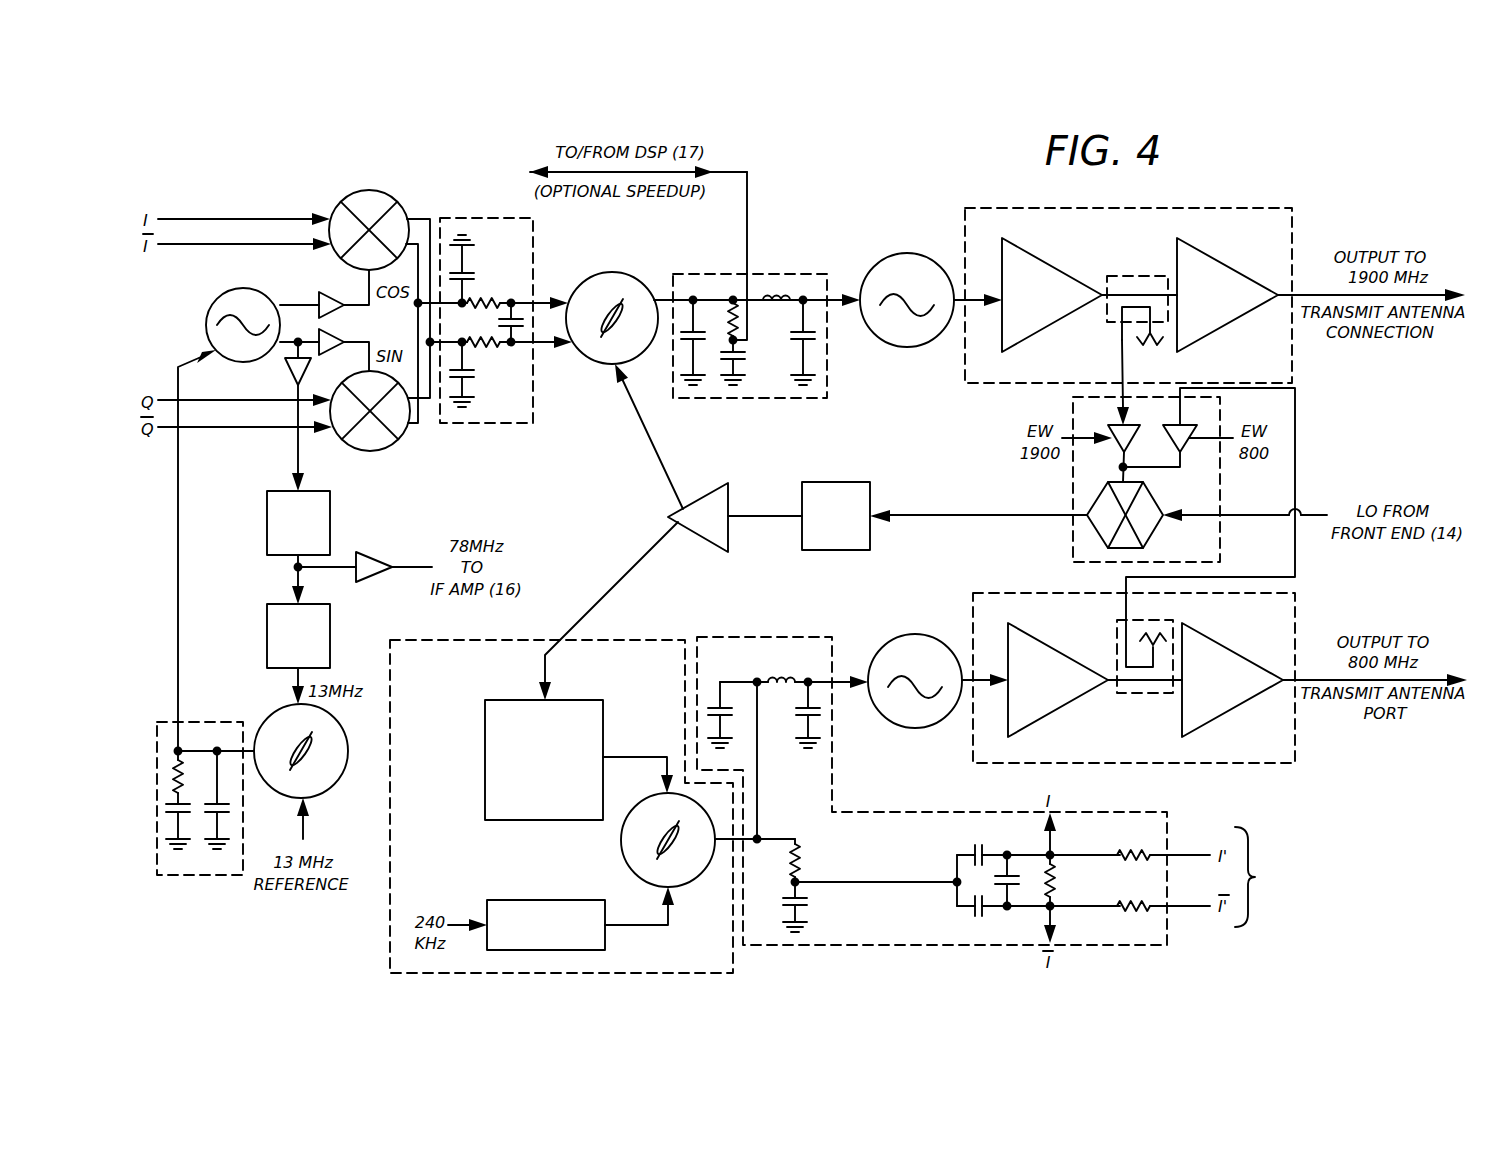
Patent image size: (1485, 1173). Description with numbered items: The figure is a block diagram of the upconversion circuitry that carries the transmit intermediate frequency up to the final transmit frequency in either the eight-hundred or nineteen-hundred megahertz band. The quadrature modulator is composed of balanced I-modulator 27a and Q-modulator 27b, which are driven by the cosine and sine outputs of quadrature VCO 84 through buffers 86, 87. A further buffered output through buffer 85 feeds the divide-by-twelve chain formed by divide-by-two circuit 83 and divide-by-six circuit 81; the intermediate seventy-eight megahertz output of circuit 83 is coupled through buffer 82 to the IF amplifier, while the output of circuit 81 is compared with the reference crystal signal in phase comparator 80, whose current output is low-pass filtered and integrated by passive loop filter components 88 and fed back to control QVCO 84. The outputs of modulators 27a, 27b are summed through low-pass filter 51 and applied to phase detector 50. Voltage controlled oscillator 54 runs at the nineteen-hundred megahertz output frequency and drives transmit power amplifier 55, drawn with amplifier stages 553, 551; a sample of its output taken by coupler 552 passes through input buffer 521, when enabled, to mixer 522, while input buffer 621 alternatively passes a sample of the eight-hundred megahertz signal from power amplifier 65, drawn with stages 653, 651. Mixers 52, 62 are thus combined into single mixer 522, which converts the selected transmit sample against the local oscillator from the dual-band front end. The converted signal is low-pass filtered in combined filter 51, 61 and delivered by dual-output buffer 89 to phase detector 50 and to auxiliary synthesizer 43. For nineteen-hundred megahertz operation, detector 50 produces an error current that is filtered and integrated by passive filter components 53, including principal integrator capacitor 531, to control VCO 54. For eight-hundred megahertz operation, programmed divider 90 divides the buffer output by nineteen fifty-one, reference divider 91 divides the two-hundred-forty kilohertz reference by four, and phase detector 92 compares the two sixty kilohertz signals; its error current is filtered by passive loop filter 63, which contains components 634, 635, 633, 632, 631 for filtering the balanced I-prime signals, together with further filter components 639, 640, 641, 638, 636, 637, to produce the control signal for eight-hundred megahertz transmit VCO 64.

The I-modulator 27a is at (370, 190).
The Q-modulator 27b is at (370, 452).
The quadrature VCO 84 is at (243, 288).
The buffer 85 is at (290, 372).
The buffer 86 is at (325, 292).
The buffer 87 is at (327, 355).
The low-pass filter 51 is at (500, 425).
The phase detector 50 is at (612, 272).
The loop filter 53 is at (750, 362).
The loop filter capacitor 531 is at (747, 357).
The voltage controlled oscillator 54 is at (905, 347).
The transmit power amplifier 55 is at (1260, 208).
The coupler 552 is at (1138, 275).
The buffer amplifier 553 is at (1043, 330).
The power amplifier 551 is at (1227, 328).
The input buffer 521 is at (1136, 434).
The input buffer 621 is at (1188, 454).
The mixer 522 is at (1158, 535).
The mixer 52 is at (1106, 481).
The mixer 62 is at (1073, 553).
The buffer 89 is at (700, 537).
The low-pass filter 61 is at (834, 551).
The auxiliary synthesizer 43 is at (423, 640).
The programmed divider 90 is at (543, 821).
The reference divider 91 is at (545, 900).
The phase detector 92 is at (697, 876).
The passive loop filter 63 is at (730, 636).
The capacitor 639 is at (712, 698).
The inductor 640 is at (785, 672).
The capacitor 641 is at (796, 716).
The 800 MHz transmit VCO 64 is at (912, 728).
The power amplifier 65 is at (1200, 765).
The buffer amplifier 653 is at (1047, 717).
The power amplifier 651 is at (1228, 711).
The resistor 638 is at (812, 857).
The capacitor 636 is at (812, 903).
The capacitor 634 is at (971, 853).
The capacitor 635 is at (972, 918).
The capacitor 637 is at (1014, 854).
The loop filter component 631 is at (1132, 852).
The loop filter component 632 is at (1132, 910).
The loop filter component 633 is at (1058, 882).
The divide by 2 circuit 83 is at (267, 524).
The buffer 82 is at (358, 552).
The divide by 6 circuit 81 is at (267, 636).
The phase comparator 80 is at (349, 749).
The passive loop filter components 88 is at (190, 877).